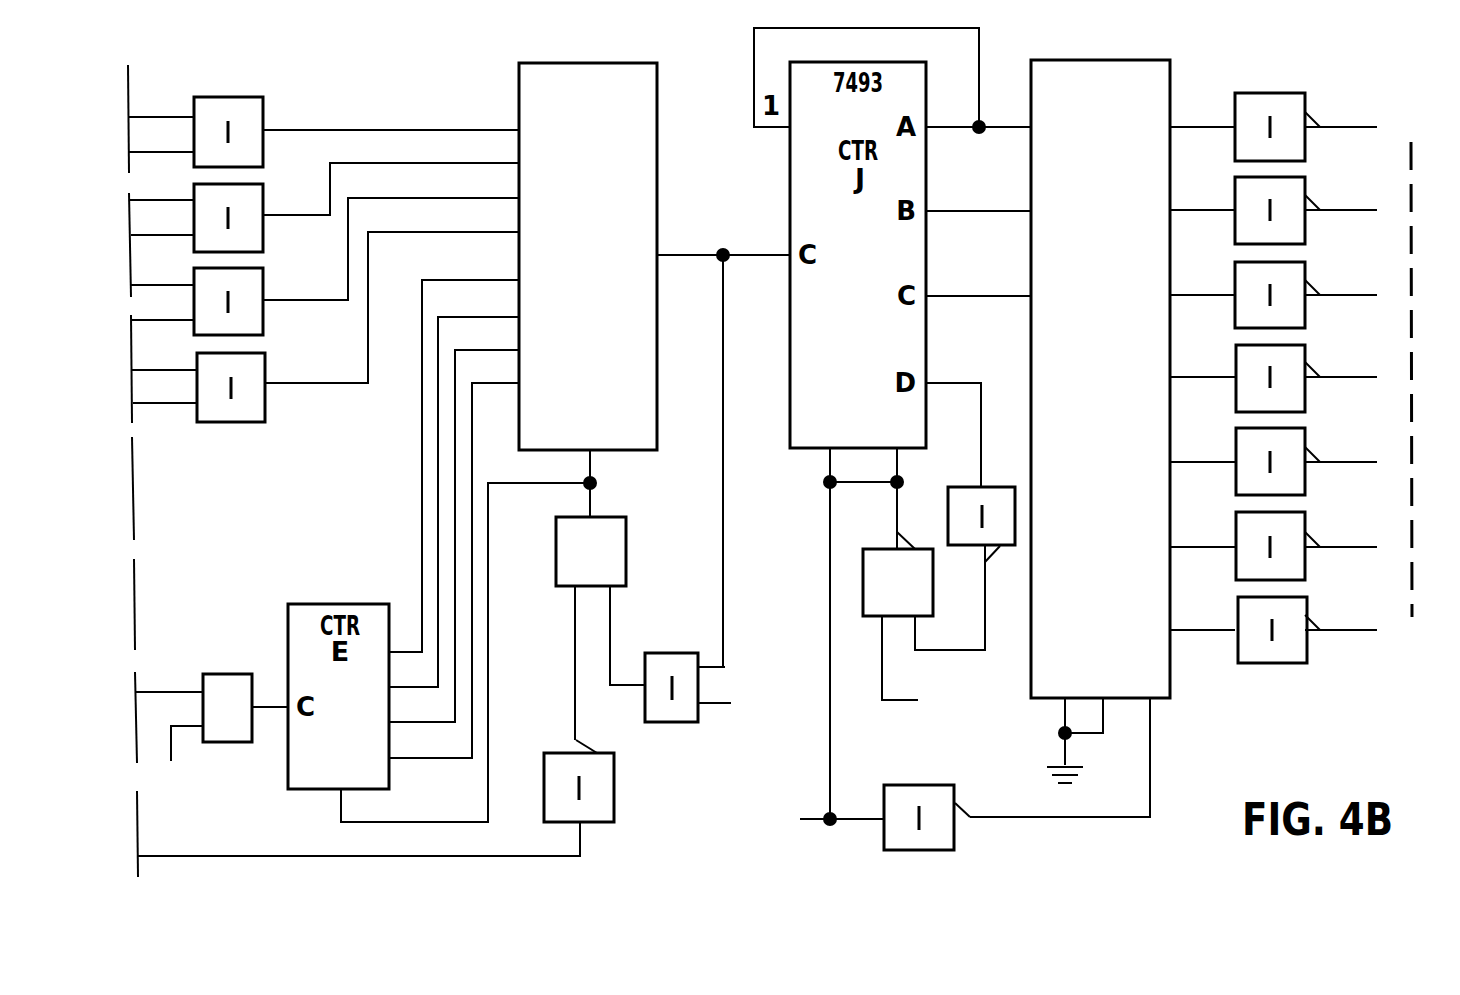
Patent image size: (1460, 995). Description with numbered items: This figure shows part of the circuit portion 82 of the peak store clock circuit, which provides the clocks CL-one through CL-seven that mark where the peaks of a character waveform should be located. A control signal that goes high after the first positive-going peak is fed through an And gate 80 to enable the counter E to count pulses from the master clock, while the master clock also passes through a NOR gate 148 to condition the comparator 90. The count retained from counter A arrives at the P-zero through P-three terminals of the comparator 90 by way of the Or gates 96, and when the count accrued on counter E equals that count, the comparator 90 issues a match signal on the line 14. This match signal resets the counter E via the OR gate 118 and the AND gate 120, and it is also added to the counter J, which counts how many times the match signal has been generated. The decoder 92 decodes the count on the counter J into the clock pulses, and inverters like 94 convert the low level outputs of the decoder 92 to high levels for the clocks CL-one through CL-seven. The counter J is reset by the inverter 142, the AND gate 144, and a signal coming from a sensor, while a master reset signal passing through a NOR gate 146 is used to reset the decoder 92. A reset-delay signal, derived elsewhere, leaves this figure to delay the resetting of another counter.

The clock line 14 is at (756, 238).
The And gate 80 is at (218, 686).
The circuit portion 82 is at (685, 82).
The comparator 90 is at (520, 82).
The decoder 92 is at (1100, 60).
The inverters 94 is at (1292, 143).
The Or gates 96 is at (250, 108).
The OR gate 118 is at (656, 664).
The AND gate 120 is at (614, 538).
The inverter 142 is at (966, 498).
The AND gate 144 is at (880, 558).
The NOR gate 146 is at (914, 798).
The NOR gate 148 is at (600, 782).